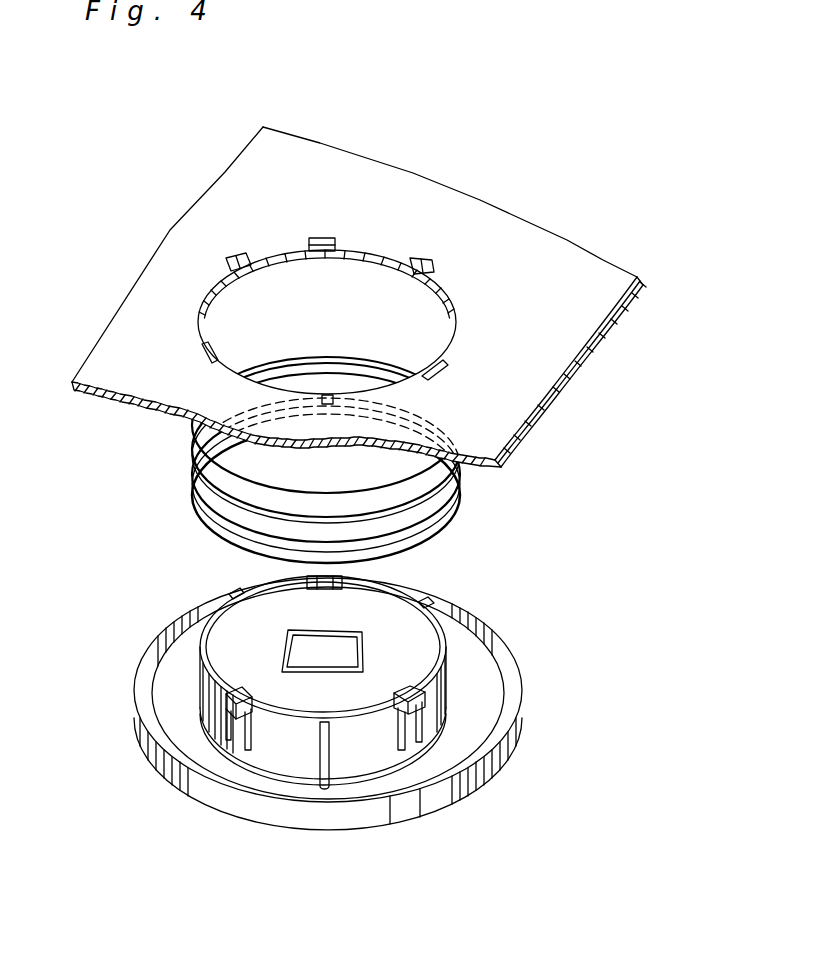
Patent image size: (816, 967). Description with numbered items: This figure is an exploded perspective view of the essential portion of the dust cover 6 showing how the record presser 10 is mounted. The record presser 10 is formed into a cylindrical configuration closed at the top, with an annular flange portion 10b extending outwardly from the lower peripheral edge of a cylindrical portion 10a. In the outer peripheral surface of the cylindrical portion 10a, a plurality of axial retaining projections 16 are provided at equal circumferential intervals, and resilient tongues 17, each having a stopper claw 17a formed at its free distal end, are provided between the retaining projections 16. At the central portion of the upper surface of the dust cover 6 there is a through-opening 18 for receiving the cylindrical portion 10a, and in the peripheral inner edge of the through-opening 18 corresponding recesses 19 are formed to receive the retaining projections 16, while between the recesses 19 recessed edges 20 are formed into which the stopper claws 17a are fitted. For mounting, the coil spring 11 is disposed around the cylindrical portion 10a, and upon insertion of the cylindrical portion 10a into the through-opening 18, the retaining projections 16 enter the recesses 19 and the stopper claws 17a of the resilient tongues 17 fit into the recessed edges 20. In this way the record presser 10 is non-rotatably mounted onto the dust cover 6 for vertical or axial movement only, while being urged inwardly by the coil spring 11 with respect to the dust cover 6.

The dust cover 6 is at (530, 332).
The record presser 10 is at (555, 560).
The cylindrical portion 10a is at (447, 607).
The annular flange portion 10b is at (267, 813).
The coil spring 11 is at (462, 510).
The axial projections 16 is at (233, 592).
The resilient tongues 17 is at (418, 730).
The stopper claw 17a is at (345, 582).
The through-opening 18 is at (410, 312).
The recesses 19 is at (232, 258).
The recessed edges 20 is at (323, 238).